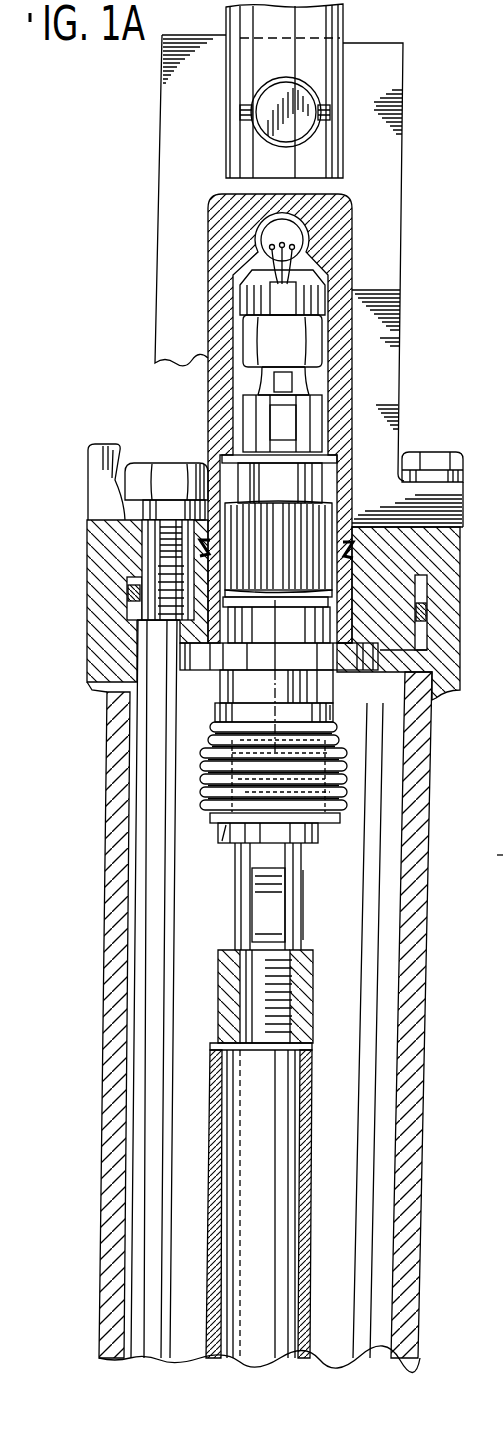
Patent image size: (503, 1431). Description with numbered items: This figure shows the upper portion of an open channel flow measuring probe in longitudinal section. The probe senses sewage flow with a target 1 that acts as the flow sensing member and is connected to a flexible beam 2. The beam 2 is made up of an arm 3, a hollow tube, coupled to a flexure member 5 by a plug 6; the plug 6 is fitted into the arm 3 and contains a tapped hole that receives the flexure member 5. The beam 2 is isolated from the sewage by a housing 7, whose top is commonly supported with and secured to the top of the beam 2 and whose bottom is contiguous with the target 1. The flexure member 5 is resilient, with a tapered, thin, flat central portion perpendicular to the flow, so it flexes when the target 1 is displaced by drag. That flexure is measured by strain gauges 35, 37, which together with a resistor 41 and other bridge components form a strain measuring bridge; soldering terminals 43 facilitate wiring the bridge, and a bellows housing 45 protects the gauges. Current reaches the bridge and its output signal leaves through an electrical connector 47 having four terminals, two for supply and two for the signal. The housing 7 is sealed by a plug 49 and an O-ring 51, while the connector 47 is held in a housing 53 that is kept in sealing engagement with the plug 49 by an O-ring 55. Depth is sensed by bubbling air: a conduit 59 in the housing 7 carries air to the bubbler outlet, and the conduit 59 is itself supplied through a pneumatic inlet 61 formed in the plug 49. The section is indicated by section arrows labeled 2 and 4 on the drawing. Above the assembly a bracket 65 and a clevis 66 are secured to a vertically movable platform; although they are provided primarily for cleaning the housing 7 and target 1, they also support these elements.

The target 1 is at (499, 1028).
The flexible beam 2 is at (313, 903).
The arm 3 is at (312, 1190).
The section line 4 is at (243, 630).
The flexure member 5 is at (235, 896).
The plug 6 is at (309, 955).
The housing 7 is at (107, 1066).
The strain gauge 35 is at (222, 722).
The strain gauge 37 is at (338, 723).
The resistor 41 is at (320, 832).
The soldering terminals 43 is at (330, 806).
The bellows housing 45 is at (347, 770).
The electrical connector 47 is at (343, 580).
The plug 49 is at (450, 558).
The O-ring 51 is at (428, 613).
The housing 53 is at (335, 347).
The O-ring 55 is at (348, 545).
The conduit 59 is at (157, 921).
The pneumatic inlet 61 is at (172, 478).
The bracket 65 is at (380, 222).
The clevis 66 is at (329, 23).